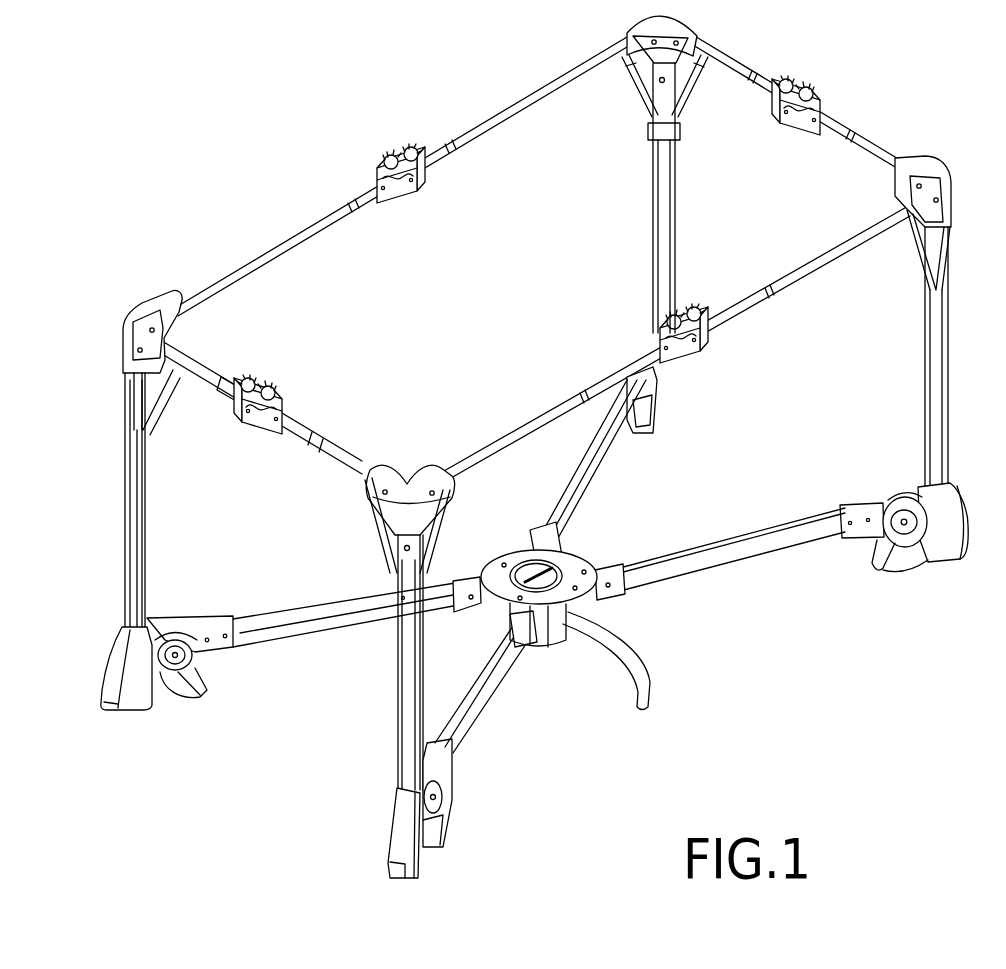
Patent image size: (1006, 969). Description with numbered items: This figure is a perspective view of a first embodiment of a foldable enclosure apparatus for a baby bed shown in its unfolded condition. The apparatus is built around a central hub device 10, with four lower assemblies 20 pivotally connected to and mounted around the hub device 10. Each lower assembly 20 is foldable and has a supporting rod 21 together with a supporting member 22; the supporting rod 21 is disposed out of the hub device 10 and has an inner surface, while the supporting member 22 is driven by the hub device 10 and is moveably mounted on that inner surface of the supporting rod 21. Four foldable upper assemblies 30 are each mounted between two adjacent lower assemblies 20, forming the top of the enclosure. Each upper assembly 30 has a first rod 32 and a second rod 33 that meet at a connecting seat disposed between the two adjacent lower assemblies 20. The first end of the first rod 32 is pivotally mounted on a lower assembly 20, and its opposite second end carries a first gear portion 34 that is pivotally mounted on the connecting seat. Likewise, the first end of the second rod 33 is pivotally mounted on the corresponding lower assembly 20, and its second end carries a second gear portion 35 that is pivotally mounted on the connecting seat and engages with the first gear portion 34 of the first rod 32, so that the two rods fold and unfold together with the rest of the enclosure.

The hub device 10 is at (605, 535).
The lower assembly 20 is at (382, 832).
The supporting rod 21 is at (398, 690).
The supporting member 22 is at (150, 535).
The upper assembly 30 is at (537, 294).
The first rod 32 is at (250, 262).
The second rod 33 is at (533, 101).
The first gear portion 34 is at (351, 146).
The second gear portion 35 is at (402, 157).